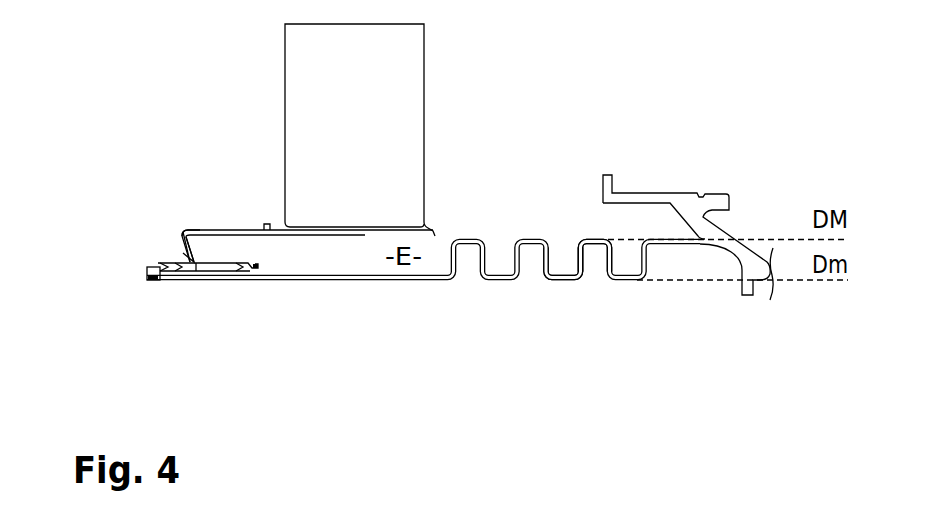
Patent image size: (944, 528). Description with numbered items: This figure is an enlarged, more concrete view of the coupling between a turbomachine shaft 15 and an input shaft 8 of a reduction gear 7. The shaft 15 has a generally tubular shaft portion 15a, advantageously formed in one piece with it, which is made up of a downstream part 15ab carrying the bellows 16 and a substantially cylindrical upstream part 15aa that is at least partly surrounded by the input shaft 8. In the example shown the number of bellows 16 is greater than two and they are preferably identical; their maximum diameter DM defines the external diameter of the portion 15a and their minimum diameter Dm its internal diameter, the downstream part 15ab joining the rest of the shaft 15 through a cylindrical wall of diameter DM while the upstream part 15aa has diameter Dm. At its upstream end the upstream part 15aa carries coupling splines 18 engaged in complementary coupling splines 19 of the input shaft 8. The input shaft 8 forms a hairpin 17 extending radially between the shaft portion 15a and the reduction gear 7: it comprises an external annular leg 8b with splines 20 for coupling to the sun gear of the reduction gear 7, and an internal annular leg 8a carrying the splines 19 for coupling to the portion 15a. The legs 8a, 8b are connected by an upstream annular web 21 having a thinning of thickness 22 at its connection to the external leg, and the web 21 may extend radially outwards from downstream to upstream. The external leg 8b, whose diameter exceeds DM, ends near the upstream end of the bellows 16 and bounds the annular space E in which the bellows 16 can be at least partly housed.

The reduction gear 7 is at (321, 67).
The input shaft 8 is at (211, 218).
The internal annular leg 8a is at (207, 272).
The external annular leg 8b is at (236, 231).
The shaft 15 is at (740, 225).
The shaft portion 15a is at (488, 308).
The upstream part 15aa is at (337, 304).
The downstream part 15ab is at (568, 301).
The bellows 16 is at (607, 290).
The hairpin 17 is at (166, 227).
The coupling splines 18 is at (187, 275).
The complementary coupling splines 19 is at (159, 321).
The splines 20 is at (353, 225).
The annular web 21 is at (183, 253).
The thinning of thickness 22 is at (183, 240).